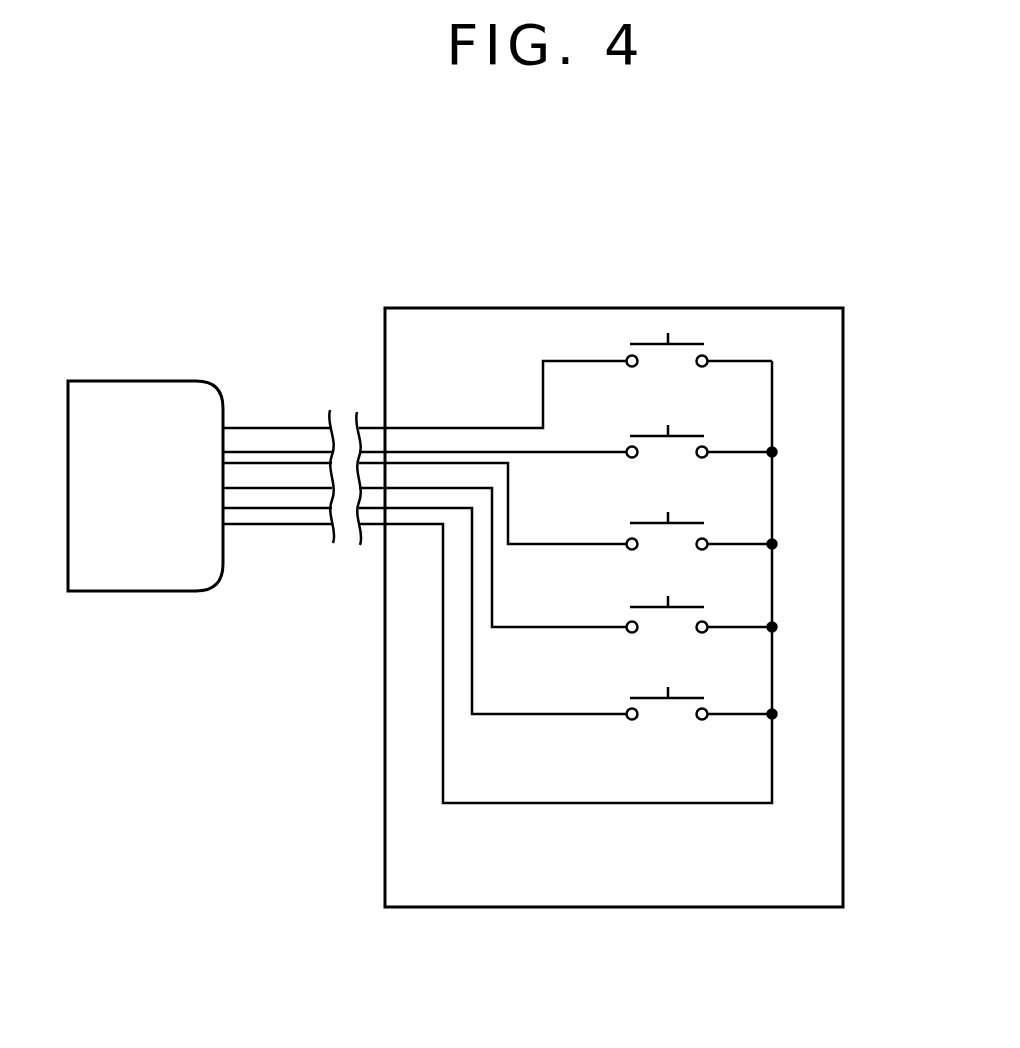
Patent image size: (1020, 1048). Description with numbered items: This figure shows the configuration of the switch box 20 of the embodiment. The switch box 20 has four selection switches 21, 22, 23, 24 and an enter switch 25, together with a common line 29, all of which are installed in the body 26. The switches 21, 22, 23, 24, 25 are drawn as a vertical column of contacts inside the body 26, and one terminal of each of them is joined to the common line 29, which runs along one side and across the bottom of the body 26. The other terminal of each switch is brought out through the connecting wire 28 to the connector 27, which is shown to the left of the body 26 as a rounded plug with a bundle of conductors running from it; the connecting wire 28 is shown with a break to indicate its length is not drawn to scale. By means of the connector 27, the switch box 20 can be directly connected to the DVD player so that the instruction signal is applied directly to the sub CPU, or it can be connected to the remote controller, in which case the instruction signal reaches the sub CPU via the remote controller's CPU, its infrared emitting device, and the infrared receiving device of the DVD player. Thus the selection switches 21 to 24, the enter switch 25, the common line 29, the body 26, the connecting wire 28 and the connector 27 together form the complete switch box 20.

The switch box 20 is at (722, 262).
The selection switch 21 is at (712, 341).
The selection switch 22 is at (703, 433).
The selection switch 23 is at (706, 522).
The selection switch 24 is at (704, 605).
The enter switch 25 is at (690, 694).
The body 26 is at (844, 585).
The connector 27 is at (146, 593).
The connecting wire 28 is at (281, 538).
The common line 29 is at (560, 804).